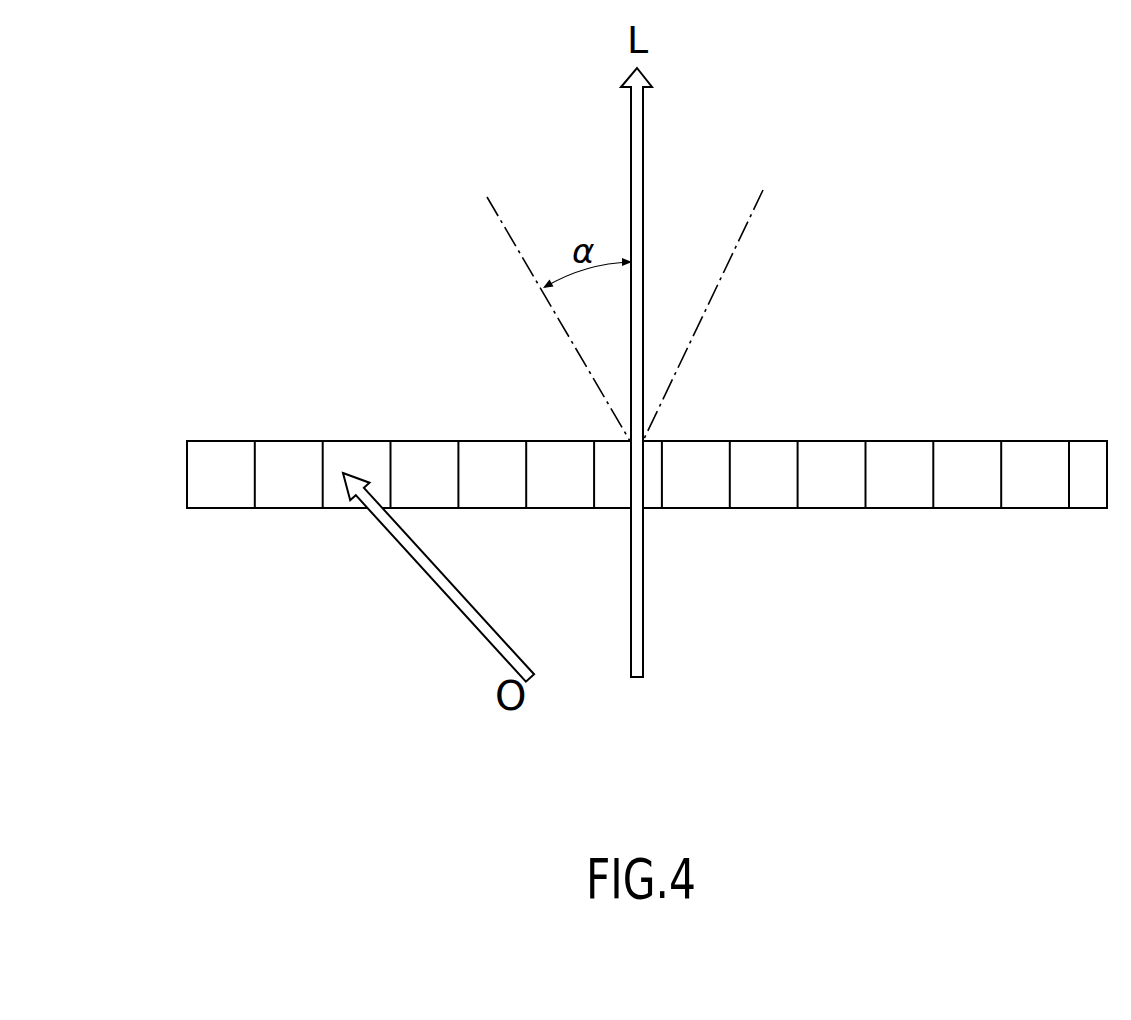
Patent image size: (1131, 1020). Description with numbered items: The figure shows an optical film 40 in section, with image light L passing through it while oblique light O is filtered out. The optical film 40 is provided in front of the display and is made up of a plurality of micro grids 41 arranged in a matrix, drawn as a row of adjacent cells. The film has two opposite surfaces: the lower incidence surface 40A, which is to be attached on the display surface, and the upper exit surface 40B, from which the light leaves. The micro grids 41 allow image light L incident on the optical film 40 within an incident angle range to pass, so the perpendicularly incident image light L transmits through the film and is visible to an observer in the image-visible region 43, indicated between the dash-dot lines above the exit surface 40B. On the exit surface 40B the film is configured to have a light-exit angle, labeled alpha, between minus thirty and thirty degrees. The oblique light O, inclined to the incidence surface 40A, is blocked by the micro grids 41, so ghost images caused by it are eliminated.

The optical film 40 is at (160, 477).
The incidence surface 40A is at (226, 508).
The exit surface 40B is at (227, 441).
The micro grid 41 is at (866, 478).
The image-visible region 43 is at (705, 196).